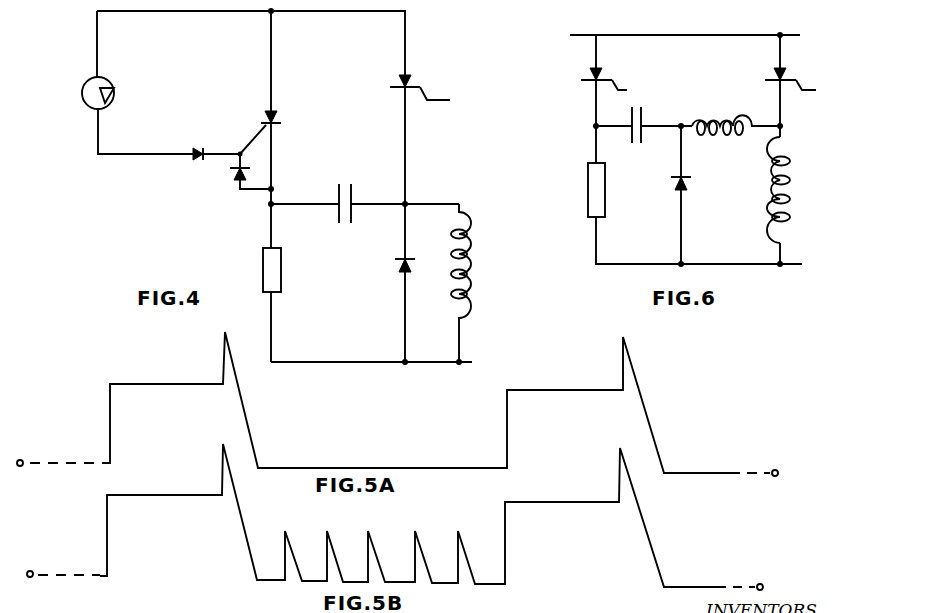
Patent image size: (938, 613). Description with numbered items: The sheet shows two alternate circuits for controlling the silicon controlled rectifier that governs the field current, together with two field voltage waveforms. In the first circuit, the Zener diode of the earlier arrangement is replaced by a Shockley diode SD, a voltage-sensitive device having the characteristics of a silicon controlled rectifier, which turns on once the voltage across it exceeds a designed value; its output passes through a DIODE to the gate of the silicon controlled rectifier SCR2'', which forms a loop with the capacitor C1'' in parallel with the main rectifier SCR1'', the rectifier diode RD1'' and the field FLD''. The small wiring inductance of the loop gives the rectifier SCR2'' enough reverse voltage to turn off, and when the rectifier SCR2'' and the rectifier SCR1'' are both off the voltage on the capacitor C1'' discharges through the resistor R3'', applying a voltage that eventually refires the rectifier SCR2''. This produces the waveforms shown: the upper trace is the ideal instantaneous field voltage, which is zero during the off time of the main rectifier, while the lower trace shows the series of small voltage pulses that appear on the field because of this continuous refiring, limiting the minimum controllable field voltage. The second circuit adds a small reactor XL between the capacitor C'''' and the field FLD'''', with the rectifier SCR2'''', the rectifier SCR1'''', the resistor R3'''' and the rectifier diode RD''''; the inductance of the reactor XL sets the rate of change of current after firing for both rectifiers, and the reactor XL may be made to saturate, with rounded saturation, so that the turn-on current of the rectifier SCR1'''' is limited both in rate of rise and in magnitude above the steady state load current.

In FIG. 4, the Shockley diode SD is at (109, 86).
In FIG. 4, the diode DIODE is at (215, 169).
In FIG. 4, the silicon controlled rectifier SCR2'' is at (288, 122).
In FIG. 4, the silicon controlled rectifier SCR1'' is at (430, 76).
In FIG. 4, the capacitor C1'' is at (365, 192).
In FIG. 4, the resistor R3'' is at (289, 262).
In FIG. 4, the rectifier diode RD1'' is at (426, 257).
In FIG. 4, the field FLD'' is at (485, 283).
In FIG. 6, the silicon controlled rectifier SCR2'''' is at (627, 68).
In FIG. 6, the silicon controlled rectifier SCR1'''' is at (766, 71).
In FIG. 6, the capacitor C'''' is at (644, 111).
In FIG. 6, the reactor XL is at (736, 135).
In FIG. 6, the resistor R3'''' is at (619, 190).
In FIG. 6, the rectifier diode RD'''' is at (701, 195).
In FIG. 6, the field FLD'''' is at (804, 190).